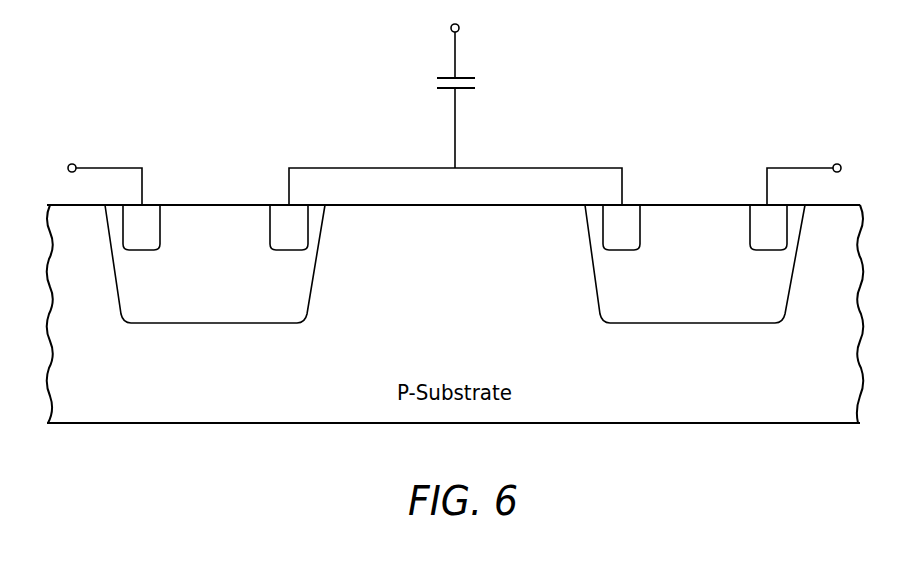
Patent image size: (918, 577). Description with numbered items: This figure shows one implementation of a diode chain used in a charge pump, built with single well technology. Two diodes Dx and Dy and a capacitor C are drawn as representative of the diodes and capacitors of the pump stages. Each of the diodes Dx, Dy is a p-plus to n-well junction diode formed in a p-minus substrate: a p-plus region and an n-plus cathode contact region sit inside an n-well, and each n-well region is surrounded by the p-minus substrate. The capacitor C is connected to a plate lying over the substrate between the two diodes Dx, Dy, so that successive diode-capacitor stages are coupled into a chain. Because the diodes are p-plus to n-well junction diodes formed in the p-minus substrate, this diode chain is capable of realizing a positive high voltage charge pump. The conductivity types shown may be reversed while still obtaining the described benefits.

The diode Dx is at (233, 184).
The diode Dy is at (677, 184).
The capacitor C is at (455, 114).